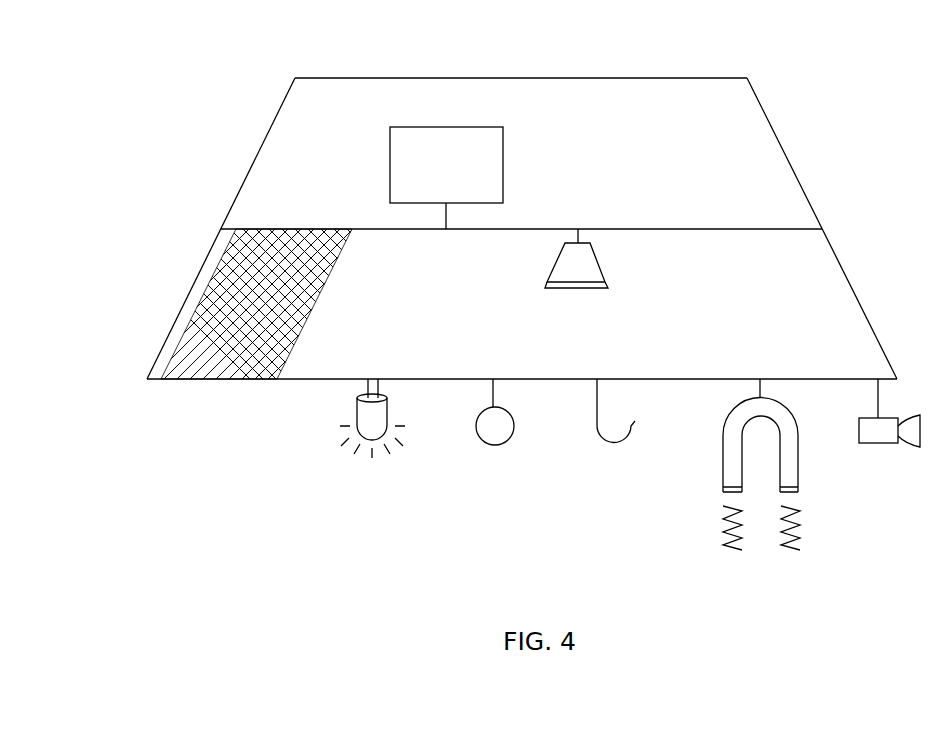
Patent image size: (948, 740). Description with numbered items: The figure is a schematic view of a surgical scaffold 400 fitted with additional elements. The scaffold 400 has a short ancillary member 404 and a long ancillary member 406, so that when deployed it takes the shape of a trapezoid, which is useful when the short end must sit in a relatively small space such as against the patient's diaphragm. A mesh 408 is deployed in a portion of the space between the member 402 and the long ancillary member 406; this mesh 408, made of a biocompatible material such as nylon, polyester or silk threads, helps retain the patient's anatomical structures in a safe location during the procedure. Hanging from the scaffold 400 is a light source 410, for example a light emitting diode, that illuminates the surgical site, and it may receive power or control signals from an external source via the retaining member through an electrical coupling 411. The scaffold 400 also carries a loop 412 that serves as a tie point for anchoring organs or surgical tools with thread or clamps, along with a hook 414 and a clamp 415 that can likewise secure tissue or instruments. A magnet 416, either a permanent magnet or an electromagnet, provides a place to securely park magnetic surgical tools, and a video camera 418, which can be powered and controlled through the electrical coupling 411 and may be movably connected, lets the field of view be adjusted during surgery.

The scaffold 400 is at (88, 197).
The member 402 is at (690, 229).
The short ancillary member 404 is at (427, 78).
The long ancillary member 406 is at (427, 379).
The mesh 408 is at (193, 360).
The light source 410 is at (357, 402).
The electrical coupling 411 is at (503, 163).
The loop 412 is at (492, 445).
The hook 414 is at (630, 442).
The clamp 415 is at (603, 273).
The magnet 416 is at (722, 473).
The video camera 418 is at (890, 443).